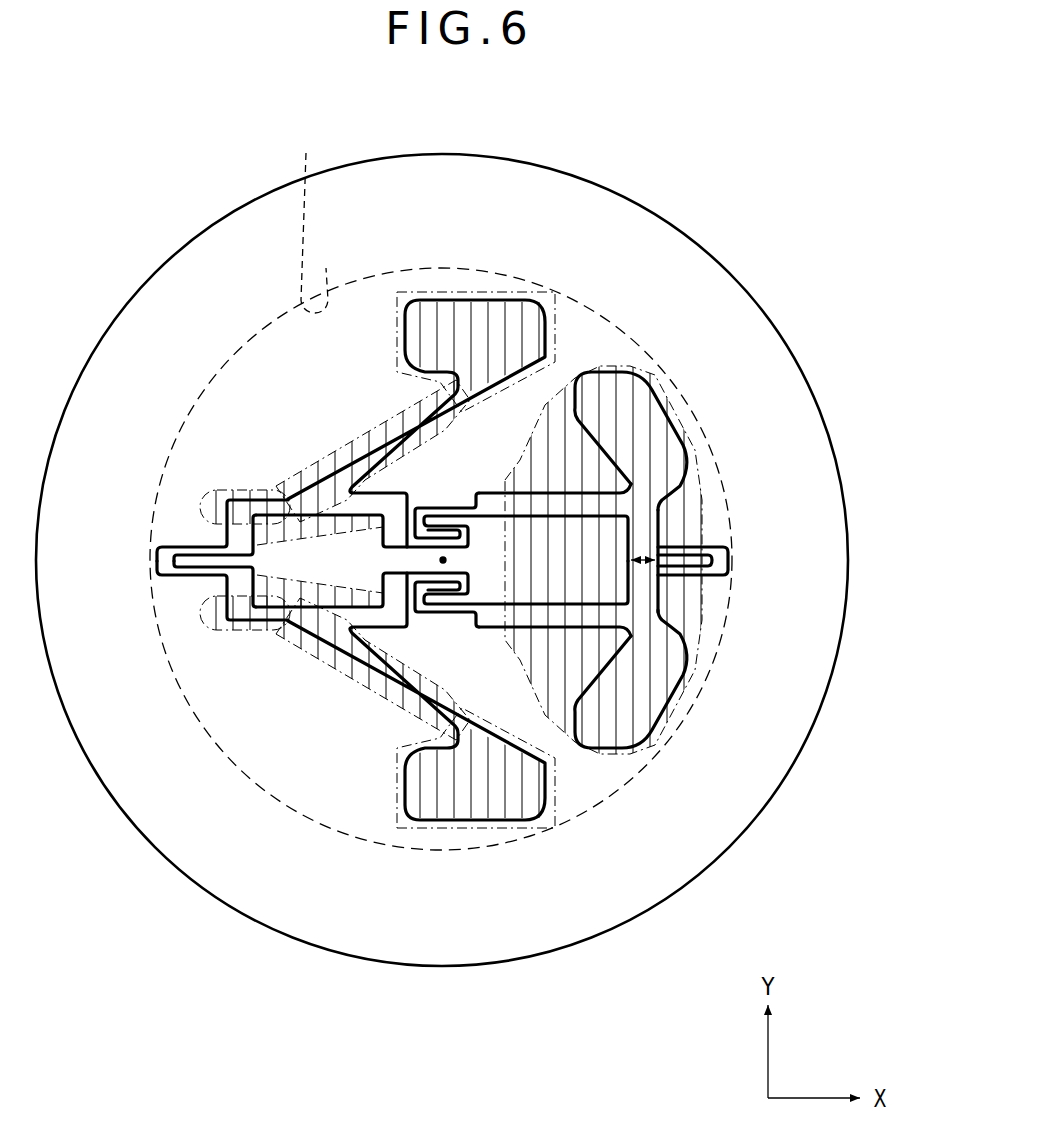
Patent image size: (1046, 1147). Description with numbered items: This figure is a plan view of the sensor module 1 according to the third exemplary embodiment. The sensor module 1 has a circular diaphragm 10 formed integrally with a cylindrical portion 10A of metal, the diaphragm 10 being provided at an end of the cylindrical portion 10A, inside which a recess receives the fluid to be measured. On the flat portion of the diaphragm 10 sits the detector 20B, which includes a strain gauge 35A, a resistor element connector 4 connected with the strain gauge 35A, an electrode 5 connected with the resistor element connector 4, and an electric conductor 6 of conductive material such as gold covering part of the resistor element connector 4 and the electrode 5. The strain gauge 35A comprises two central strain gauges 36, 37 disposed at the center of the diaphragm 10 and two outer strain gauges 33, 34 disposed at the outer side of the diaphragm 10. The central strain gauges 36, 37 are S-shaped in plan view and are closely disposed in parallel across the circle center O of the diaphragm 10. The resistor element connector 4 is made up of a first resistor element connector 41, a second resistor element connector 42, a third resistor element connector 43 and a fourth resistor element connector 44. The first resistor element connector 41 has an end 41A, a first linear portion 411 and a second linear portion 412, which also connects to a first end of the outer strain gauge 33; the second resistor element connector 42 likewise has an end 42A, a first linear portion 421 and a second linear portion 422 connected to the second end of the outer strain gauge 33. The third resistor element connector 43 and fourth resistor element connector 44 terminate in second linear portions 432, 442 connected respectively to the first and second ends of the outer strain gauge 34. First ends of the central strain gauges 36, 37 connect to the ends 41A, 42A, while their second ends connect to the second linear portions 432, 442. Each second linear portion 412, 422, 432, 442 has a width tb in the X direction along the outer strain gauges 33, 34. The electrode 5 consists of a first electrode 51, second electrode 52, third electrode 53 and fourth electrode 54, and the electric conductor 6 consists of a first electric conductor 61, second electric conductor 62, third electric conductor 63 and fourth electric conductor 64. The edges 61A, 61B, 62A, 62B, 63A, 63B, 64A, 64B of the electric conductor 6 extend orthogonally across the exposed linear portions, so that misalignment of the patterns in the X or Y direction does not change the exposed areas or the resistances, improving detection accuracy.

The sensor module 1 is at (690, 127).
The diaphragm 10 is at (228, 236).
The cylindrical portion 10A is at (308, 225).
The detector 20B is at (560, 305).
The resistor element connector 4 is at (360, 447).
The electrode 5 is at (640, 372).
The electric conductor 6 is at (418, 298).
The outer strain gauge 33 is at (157, 558).
The outer strain gauge 34 is at (733, 558).
The strain gauge 35A is at (744, 572).
The central strain gauge 36 is at (448, 533).
The central strain gauge 37 is at (448, 612).
The first resistor element connector 41 is at (282, 476).
The end 41A is at (362, 532).
The first linear portion 411 is at (388, 452).
The second linear portion 412 is at (233, 538).
The second resistor element connector 42 is at (300, 672).
The end 42A is at (362, 590).
The first linear portion 421 is at (395, 660).
The second linear portion 422 is at (233, 587).
The third resistor element connector 43 is at (592, 765).
The second linear portion 432 is at (498, 616).
The fourth resistor element connector 44 is at (478, 488).
The second linear portion 442 is at (490, 512).
The first electrode 51 is at (433, 415).
The second electrode 52 is at (383, 682).
The third electrode 53 is at (660, 700).
The fourth electrode 54 is at (660, 410).
The first electric conductor 61 is at (490, 300).
The edge 61A is at (350, 455).
The edge 61B is at (237, 520).
The second electric conductor 62 is at (470, 830).
The edge 62A is at (370, 650).
The edge 62B is at (237, 602).
The third electric conductor 63 is at (628, 762).
The edge 63A is at (512, 638).
The edge 63B is at (680, 634).
The fourth electric conductor 64 is at (565, 385).
The edge 64A is at (508, 515).
The edge 64B is at (670, 513).
The circle center O is at (443, 560).
The width tb is at (643, 553).